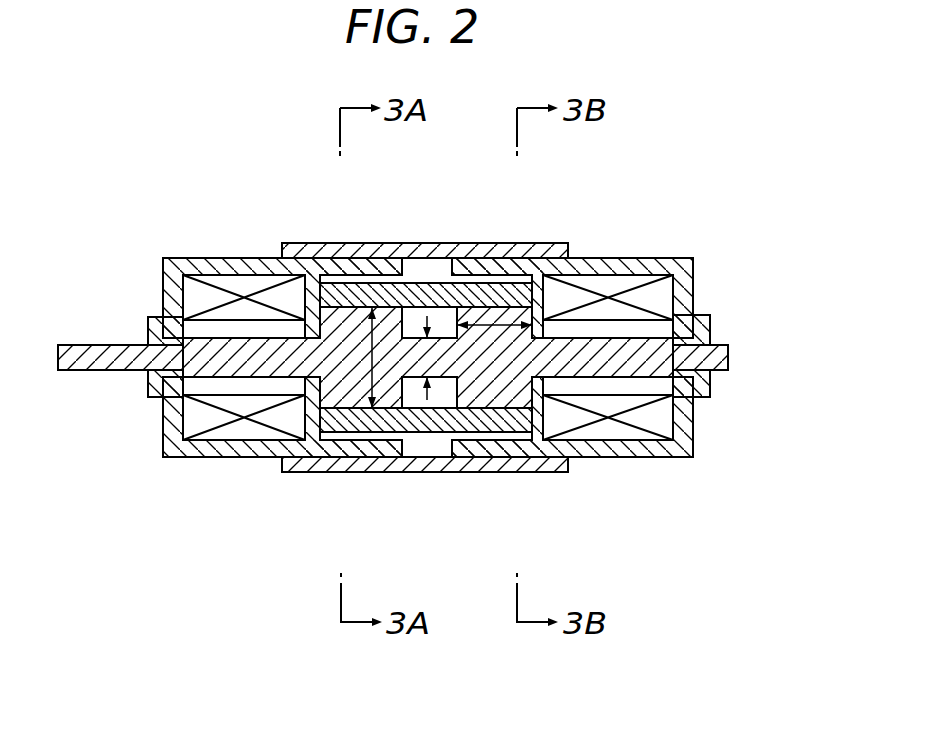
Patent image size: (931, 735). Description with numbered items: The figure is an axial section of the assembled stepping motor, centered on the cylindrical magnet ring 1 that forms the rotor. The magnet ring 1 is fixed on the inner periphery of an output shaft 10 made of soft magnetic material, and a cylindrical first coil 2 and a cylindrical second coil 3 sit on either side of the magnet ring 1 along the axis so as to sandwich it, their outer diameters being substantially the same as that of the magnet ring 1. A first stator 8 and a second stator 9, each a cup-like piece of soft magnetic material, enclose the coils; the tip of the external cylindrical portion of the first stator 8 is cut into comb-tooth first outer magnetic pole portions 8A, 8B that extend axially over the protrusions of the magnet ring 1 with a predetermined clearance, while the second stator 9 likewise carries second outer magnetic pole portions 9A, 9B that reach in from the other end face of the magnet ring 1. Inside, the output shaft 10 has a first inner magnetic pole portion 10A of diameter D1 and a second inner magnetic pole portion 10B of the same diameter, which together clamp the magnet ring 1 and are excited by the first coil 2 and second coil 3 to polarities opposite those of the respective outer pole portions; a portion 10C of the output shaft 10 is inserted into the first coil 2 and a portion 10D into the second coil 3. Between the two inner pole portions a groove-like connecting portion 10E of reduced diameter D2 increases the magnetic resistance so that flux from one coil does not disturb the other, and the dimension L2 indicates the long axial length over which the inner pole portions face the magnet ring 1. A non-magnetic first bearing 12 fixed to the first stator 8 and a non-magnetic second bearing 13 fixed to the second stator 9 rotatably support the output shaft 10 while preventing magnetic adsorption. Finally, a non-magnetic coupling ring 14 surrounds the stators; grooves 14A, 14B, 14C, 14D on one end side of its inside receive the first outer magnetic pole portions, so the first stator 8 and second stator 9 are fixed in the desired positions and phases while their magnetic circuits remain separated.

The magnet ring 1 is at (410, 358).
The first coil 2 is at (234, 437).
The second coil 3 is at (614, 432).
The first stator 8 is at (222, 263).
The first outer magnetic pole portion 8A is at (335, 263).
The first outer magnetic pole portion 8B is at (343, 447).
The second stator 9 is at (657, 262).
The second outer magnetic pole portion 9A is at (509, 262).
The second outer magnetic pole portion 9B is at (549, 465).
The output shaft 10 is at (387, 362).
The first inner magnetic pole portion 10A is at (337, 398).
The second inner magnetic pole portion 10B is at (513, 308).
The portion of the output shaft 10C is at (236, 347).
The portion of the output shaft 10D is at (628, 367).
The connecting portion 10E is at (419, 380).
The first bearing 12 is at (146, 382).
The second bearing 13 is at (706, 332).
The coupling ring 14 is at (428, 255).
The groove 14A is at (376, 253).
The groove 14B is at (380, 462).
The groove 14C is at (466, 265).
The groove 14D is at (517, 468).